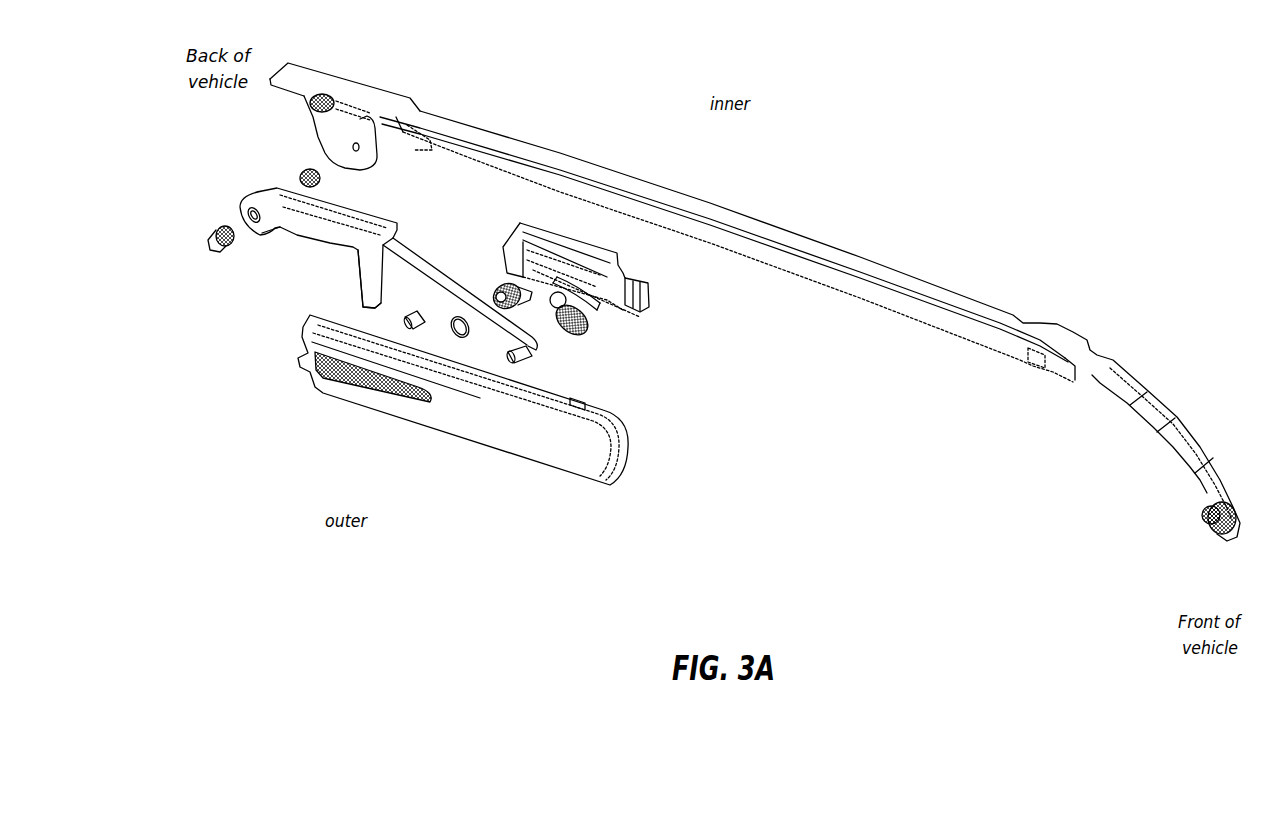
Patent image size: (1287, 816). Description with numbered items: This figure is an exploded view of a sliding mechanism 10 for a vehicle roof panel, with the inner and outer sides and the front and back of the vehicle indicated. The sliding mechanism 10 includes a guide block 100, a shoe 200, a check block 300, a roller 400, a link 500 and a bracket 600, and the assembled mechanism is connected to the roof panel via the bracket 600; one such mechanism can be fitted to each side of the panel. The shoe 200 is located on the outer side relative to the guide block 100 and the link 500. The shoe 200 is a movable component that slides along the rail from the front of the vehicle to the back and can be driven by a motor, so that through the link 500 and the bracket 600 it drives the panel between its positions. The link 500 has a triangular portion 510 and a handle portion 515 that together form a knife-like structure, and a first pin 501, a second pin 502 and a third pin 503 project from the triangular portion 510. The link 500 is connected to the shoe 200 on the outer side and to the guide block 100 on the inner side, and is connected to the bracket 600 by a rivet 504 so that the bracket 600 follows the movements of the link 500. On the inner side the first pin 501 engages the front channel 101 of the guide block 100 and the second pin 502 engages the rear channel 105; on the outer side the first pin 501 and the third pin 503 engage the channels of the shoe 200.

The sliding mechanism 10 is at (1050, 115).
The guide block 100 is at (653, 313).
The front channel 101 is at (603, 305).
The rear channel 105 is at (505, 250).
The shoe 200 is at (626, 463).
The check block 300 is at (590, 347).
The roller 400 is at (530, 311).
The link 500 is at (393, 214).
The first pin 501 is at (514, 356).
The second pin 502 is at (455, 320).
The third pin 503 is at (412, 316).
The rivet 504 is at (210, 231).
The triangular portion 510 is at (357, 287).
The handle portion 515 is at (290, 230).
The bracket 600 is at (1016, 312).